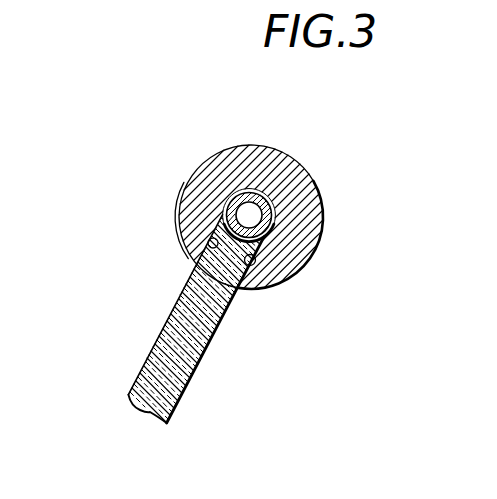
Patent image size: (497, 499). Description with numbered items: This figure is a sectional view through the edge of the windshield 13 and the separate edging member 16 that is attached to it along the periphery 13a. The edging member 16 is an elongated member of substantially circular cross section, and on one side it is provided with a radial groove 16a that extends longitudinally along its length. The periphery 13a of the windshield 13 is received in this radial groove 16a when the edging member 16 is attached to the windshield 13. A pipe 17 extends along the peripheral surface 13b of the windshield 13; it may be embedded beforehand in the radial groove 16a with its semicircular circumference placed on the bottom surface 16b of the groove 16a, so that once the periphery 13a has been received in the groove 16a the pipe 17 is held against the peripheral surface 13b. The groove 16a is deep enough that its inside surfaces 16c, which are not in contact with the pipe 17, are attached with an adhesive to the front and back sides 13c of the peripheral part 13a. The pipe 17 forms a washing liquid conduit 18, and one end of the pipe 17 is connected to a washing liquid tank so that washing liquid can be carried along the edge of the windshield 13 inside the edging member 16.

The windshield 13 is at (140, 412).
The periphery 13a is at (198, 262).
The peripheral surface 13b is at (277, 228).
The front and back sides 13c is at (232, 254).
The edging member 16 is at (287, 153).
The radial groove 16a is at (193, 248).
The bottom surface 16b is at (275, 212).
The inside surfaces 16c is at (257, 285).
The pipe 17 is at (226, 205).
The washing liquid conduit 18 is at (248, 211).